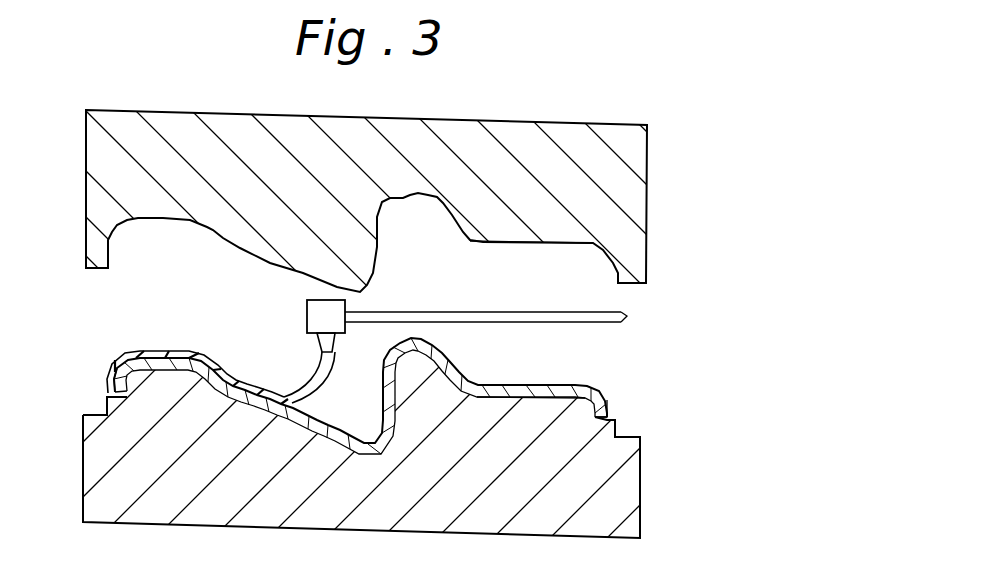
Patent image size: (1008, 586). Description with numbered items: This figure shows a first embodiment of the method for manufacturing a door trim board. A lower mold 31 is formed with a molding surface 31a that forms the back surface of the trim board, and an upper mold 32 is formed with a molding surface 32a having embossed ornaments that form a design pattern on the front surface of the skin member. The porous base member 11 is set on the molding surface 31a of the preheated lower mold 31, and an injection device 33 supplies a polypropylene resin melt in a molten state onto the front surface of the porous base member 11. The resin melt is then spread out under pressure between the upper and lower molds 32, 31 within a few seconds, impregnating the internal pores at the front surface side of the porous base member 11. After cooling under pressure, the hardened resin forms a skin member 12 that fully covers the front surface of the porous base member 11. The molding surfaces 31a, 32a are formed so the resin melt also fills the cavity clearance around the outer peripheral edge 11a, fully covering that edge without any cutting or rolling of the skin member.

The upper mold 32 is at (634, 207).
The molding surface 32a is at (543, 243).
The lower mold 31 is at (615, 505).
The molding surface 31a is at (508, 392).
The porous base member 11 is at (570, 392).
The outer peripheral edge 11a is at (86, 427).
The skin member 12 is at (178, 360).
The injection device 33 is at (307, 315).